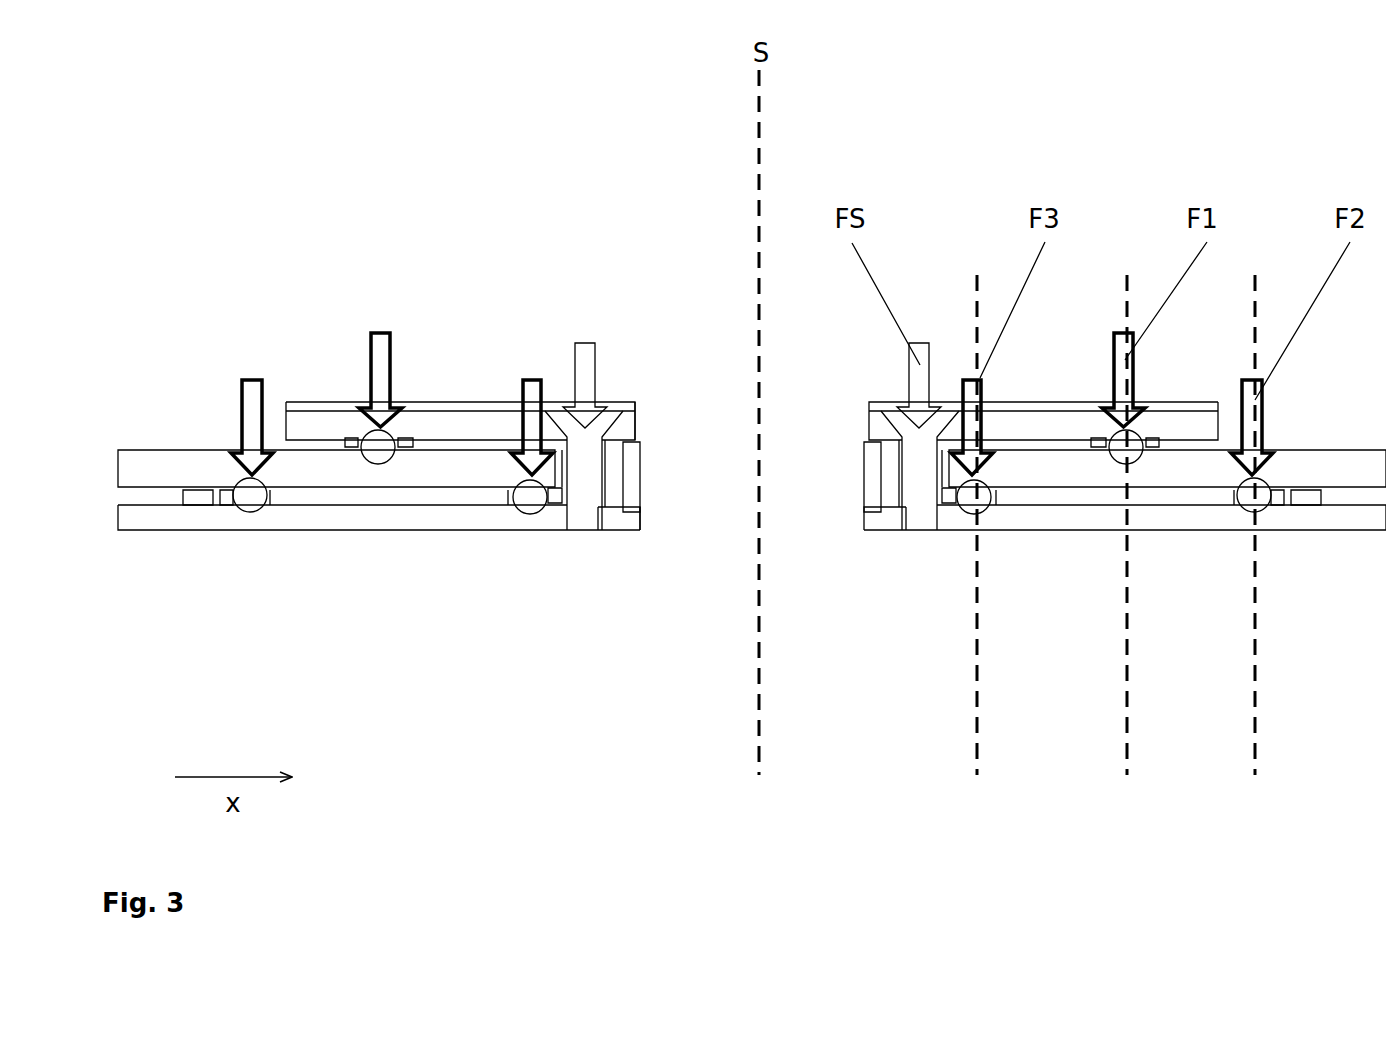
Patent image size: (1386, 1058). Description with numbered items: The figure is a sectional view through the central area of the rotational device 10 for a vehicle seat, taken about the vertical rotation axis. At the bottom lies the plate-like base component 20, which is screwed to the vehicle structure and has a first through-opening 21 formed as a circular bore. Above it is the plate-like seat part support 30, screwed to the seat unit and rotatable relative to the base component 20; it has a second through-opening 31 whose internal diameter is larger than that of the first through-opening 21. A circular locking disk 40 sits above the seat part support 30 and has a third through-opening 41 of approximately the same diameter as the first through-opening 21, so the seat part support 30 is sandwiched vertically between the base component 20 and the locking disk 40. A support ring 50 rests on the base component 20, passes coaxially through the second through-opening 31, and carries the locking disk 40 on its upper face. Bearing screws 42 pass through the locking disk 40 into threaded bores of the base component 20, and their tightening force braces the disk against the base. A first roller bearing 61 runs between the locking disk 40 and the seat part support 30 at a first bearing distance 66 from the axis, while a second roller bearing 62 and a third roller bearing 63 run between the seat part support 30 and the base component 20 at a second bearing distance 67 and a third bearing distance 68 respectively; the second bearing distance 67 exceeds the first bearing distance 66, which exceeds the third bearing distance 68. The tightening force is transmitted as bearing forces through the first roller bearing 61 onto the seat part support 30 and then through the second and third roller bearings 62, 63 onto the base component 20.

The rotational device 10 is at (190, 98).
The base component 20 is at (488, 523).
The first through-opening 21 is at (712, 512).
The seat part support 30 is at (190, 460).
The second through-opening 31 is at (722, 470).
The locking disk 40 is at (313, 425).
The third through-opening 41 is at (722, 420).
The bearing screws 42 is at (583, 497).
The support ring 50 is at (632, 473).
The first roller bearing 61 is at (378, 447).
The second roller bearing 62 is at (250, 495).
The third roller bearing 63 is at (530, 497).
The first bearing distance 66 is at (759, 719).
The second bearing distance 67 is at (759, 684).
The third bearing distance 68 is at (759, 753).